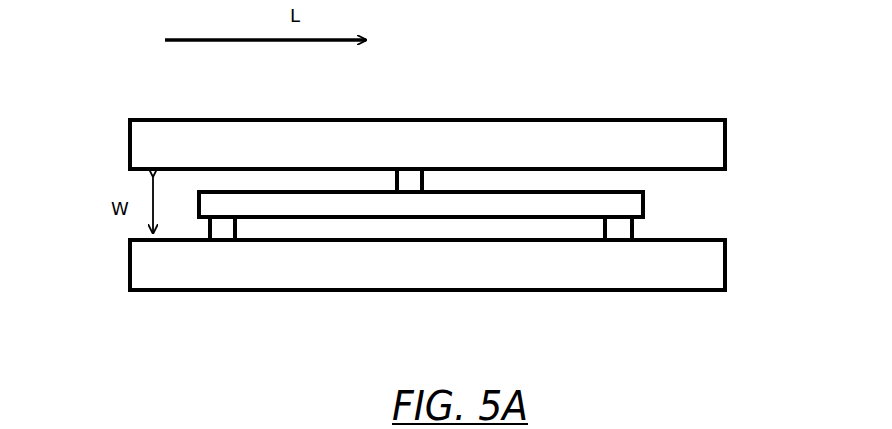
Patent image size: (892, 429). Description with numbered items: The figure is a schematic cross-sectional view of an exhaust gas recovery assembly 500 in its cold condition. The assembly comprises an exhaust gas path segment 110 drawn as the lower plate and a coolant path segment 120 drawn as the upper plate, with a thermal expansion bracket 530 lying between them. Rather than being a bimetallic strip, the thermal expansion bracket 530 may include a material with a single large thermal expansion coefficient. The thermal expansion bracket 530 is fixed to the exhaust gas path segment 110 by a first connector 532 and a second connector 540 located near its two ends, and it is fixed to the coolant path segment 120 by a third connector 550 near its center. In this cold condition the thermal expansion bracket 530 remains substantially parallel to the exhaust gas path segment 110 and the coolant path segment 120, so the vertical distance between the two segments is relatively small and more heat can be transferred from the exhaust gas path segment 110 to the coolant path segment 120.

The exhaust gas path segment 110 is at (467, 275).
The coolant path segment 120 is at (517, 146).
The exhaust gas recovery assembly 500 is at (700, 207).
The thermal expansion bracket 530 is at (194, 205).
The first connector 532 is at (223, 232).
The second connector 540 is at (620, 228).
The third connector 550 is at (412, 180).